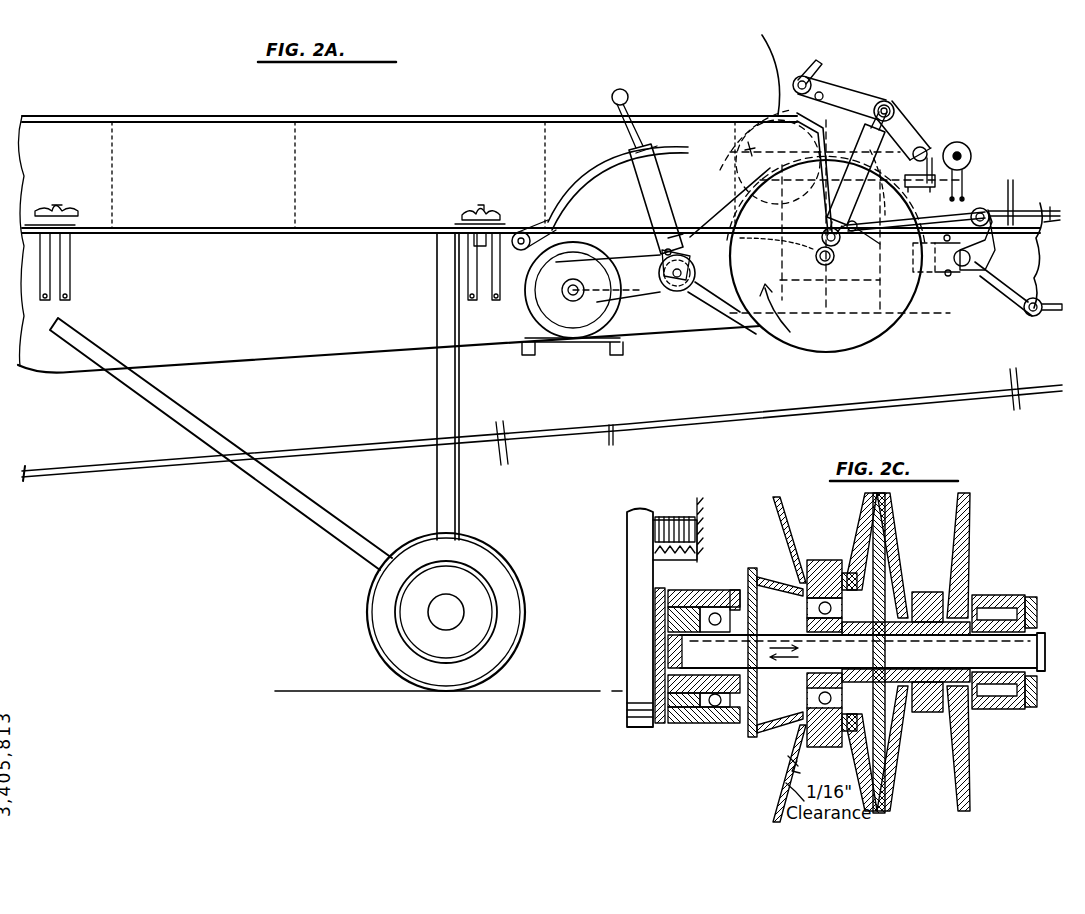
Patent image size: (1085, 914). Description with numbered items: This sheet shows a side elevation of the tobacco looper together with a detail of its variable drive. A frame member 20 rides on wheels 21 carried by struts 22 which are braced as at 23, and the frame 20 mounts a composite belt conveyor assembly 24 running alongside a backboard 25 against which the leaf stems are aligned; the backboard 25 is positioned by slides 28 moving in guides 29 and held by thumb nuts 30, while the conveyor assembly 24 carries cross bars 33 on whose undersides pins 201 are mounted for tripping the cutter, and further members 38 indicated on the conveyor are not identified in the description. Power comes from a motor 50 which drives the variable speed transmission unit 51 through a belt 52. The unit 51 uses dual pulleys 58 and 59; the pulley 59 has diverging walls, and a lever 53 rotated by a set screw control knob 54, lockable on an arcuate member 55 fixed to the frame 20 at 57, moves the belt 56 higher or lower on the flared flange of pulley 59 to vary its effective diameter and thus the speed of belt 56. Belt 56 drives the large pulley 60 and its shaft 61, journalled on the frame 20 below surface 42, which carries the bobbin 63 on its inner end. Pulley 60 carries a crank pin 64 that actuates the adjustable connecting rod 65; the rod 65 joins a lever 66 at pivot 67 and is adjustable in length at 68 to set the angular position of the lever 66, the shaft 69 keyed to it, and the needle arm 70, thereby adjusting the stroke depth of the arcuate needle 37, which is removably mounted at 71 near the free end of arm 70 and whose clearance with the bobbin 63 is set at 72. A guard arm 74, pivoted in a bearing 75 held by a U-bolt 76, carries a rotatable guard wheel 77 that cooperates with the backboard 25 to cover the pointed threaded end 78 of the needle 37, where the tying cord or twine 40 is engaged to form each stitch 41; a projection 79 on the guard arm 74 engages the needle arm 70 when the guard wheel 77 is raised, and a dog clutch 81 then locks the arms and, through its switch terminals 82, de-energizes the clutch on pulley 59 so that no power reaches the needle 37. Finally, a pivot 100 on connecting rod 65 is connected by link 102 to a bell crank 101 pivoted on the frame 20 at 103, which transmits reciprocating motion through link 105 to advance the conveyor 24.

In FIG. 2A, the frame member 20 is at (185, 234).
In FIG. 2A, the wheels 21 is at (370, 593).
In FIG. 2A, the struts 22 is at (436, 483).
In FIG. 2A, the brace 23 is at (292, 506).
In FIG. 2A, the composite belt conveyor assembly 24 is at (896, 435).
In FIG. 2A, the backboard 25 is at (162, 123).
In FIG. 2A, the slides 28 is at (462, 229).
In FIG. 2A, the guides 29 is at (471, 303).
In FIG. 2A, the thumb nuts 30 is at (475, 219).
In FIG. 2A, the cross bars 33 is at (1012, 211).
In FIG. 2A, the arcuate needle 37 is at (810, 69).
In FIG. 2A, the peg 38 is at (510, 451).
In FIG. 2A, the tying cord or twine 40 is at (760, 41).
In FIG. 2A, the stitch 41 is at (1030, 211).
In FIG. 2A, the surface 42 is at (1043, 215).
In FIG. 2A, the motor 50 is at (552, 309).
In FIG. 2A, the variable speed transmission unit 51 is at (680, 293).
In FIG. 2C, the variable speed transmission unit 51 is at (688, 781).
In FIG. 2A, the belt 52 is at (626, 289).
In FIG. 2C, the belt 52 is at (823, 561).
In FIG. 2A, the lever 53 is at (657, 195).
In FIG. 2C, the lever 53 is at (632, 575).
In FIG. 2A, the set screw control knob 54 is at (622, 91).
In FIG. 2A, the arcuate member 55 is at (682, 149).
In FIG. 2A, the belt 56 is at (735, 337).
In FIG. 2C, the belt 56 is at (925, 593).
In FIG. 2A, the mounting point 57 is at (520, 233).
In FIG. 2C, the pulley 58 is at (965, 531).
In FIG. 2A, the pulley 59 is at (695, 273).
In FIG. 2C, the pulley 59 is at (775, 801).
In FIG. 2A, the large pulley 60 is at (812, 341).
In FIG. 2A, the shaft 61 is at (832, 249).
In FIG. 2A, the bobbin 63 is at (822, 263).
In FIG. 2A, the crank pin 64 is at (812, 243).
In FIG. 2A, the adjustable connecting rod 65 is at (882, 218).
In FIG. 2A, the lever 66 is at (912, 126).
In FIG. 2A, the pivot 67 is at (894, 106).
In FIG. 2A, the length adjustment 68 is at (886, 105).
In FIG. 2A, the shaft 69 is at (928, 151).
In FIG. 2A, the needle arm 70 is at (850, 106).
In FIG. 2A, the needle mounting 71 is at (812, 79).
In FIG. 2A, the needle clearance adjustment 72 is at (826, 93).
In FIG. 2A, the guard arm 74 is at (832, 151).
In FIG. 2A, the bearing 75 is at (975, 161).
In FIG. 2A, the U-bolt 76 is at (958, 146).
In FIG. 2A, the guard wheel 77 is at (758, 151).
In FIG. 2A, the pointed threaded end 78 is at (750, 179).
In FIG. 2A, the projection 79 is at (852, 163).
In FIG. 2A, the dog clutch 81 is at (970, 155).
In FIG. 2A, the terminals 82 is at (965, 197).
In FIG. 2A, the pivot 100 is at (852, 233).
In FIG. 2A, the bell crank 101 is at (1004, 303).
In FIG. 2A, the link 102 is at (972, 213).
In FIG. 2A, the pivot 103 is at (972, 253).
In FIG. 2A, the link 105 is at (1045, 311).
In FIG. 2A, the pins 201 is at (503, 426).